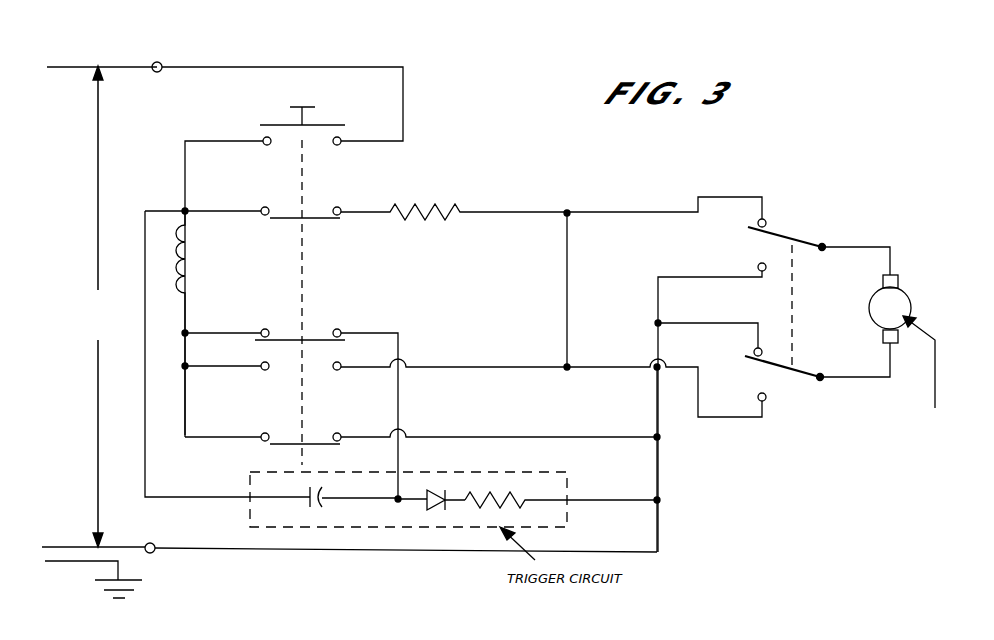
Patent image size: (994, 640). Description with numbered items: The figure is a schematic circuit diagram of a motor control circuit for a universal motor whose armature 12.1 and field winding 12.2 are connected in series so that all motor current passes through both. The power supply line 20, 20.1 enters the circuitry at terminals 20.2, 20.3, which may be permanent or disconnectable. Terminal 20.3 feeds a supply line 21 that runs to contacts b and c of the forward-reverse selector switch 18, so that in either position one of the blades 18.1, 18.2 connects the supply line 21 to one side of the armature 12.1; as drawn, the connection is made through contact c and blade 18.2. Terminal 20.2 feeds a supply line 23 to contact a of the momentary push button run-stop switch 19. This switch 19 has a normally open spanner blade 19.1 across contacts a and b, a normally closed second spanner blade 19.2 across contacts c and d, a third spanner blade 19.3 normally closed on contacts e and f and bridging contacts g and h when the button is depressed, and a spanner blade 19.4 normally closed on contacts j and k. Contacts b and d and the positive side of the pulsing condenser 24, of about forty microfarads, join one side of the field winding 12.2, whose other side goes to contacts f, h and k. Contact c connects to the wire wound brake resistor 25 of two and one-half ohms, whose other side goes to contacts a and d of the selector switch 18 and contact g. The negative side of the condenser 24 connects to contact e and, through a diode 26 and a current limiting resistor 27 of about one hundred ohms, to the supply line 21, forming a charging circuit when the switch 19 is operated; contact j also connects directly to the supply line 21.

The power supply line 20 is at (70, 64).
The power supply line 20.1 is at (52, 546).
The terminal 20.2 is at (161, 62).
The terminal 20.3 is at (154, 553).
The supply line 23 is at (237, 66).
The supply line 21 is at (316, 553).
The push button run-stop switch 19 is at (273, 118).
The spanner blade 19.1 is at (325, 124).
The second spanner blade 19.2 is at (290, 225).
The third spanner blade 19.3 is at (310, 337).
The spanner blade 19.4 is at (275, 446).
The field winding 12.2 is at (188, 283).
The armature 12.1 is at (898, 302).
The brake resistor 25 is at (440, 215).
The pulsing condenser 24 is at (318, 510).
The diode 26 is at (438, 512).
The current limiting resistor 27 is at (505, 500).
The forward-reverse selector switch 18 is at (803, 231).
The blade 18.1 is at (812, 252).
The blade 18.2 is at (808, 383).